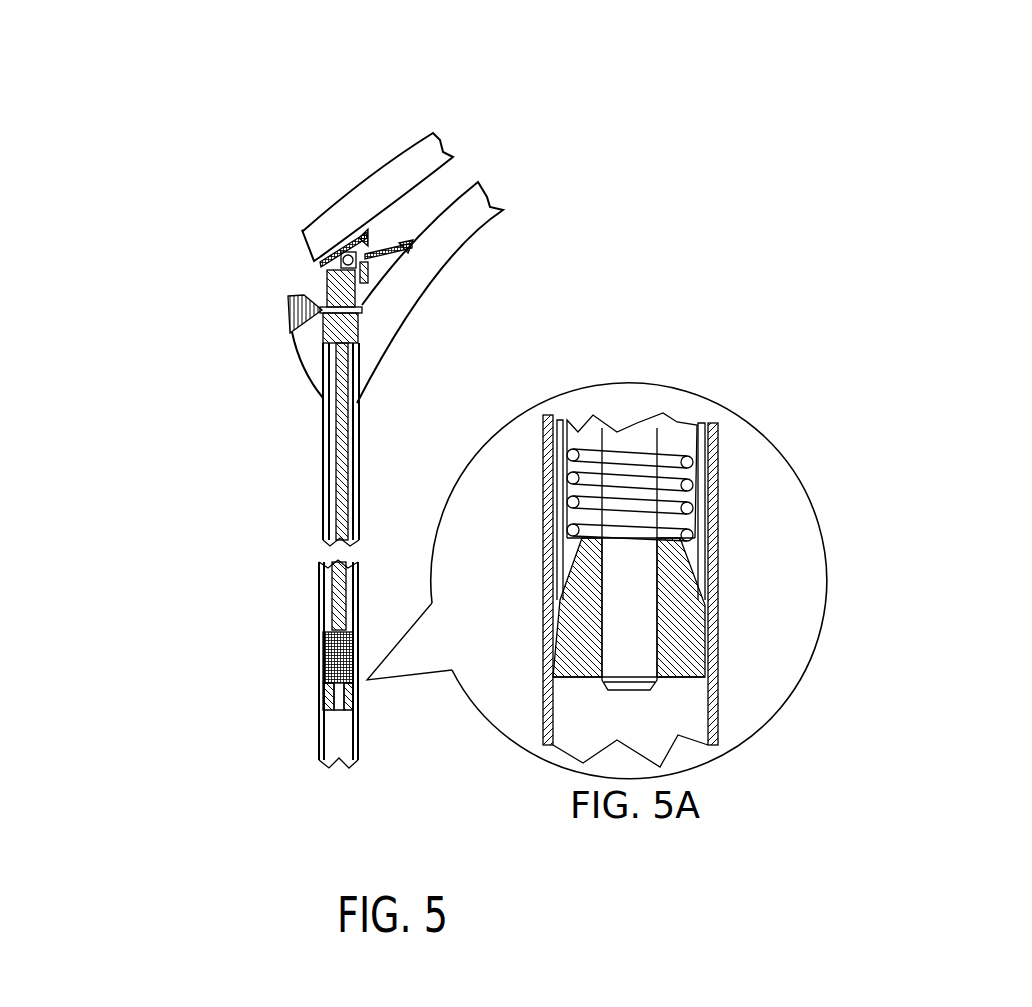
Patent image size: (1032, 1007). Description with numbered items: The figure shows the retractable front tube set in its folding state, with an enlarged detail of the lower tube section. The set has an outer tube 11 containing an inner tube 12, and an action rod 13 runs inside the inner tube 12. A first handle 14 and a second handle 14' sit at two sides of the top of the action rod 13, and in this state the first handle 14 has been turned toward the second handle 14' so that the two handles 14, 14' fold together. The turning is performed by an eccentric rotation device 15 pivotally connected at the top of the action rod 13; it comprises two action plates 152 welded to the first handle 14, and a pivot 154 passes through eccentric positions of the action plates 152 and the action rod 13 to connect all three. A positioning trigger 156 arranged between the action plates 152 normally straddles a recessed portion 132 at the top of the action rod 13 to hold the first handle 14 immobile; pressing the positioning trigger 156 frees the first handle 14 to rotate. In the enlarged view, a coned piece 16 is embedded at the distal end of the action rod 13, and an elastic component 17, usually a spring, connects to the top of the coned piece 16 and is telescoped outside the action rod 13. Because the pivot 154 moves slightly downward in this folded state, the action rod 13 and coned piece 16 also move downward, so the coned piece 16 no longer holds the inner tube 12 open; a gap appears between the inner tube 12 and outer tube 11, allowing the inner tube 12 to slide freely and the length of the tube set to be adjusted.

In FIG. 5A, the outer tube 11 is at (720, 562).
In FIG. 5A, the inner tube 12 is at (700, 498).
In FIG. 5, the action rod 13 is at (337, 458).
In FIG. 5A, the action rod 13 is at (643, 437).
In FIG. 5, the first handle 14 is at (377, 152).
In FIG. 5, the second handle 14' is at (512, 292).
In FIG. 5, the eccentric rotation device 15 is at (288, 255).
In FIG. 5A, the coned piece 16 is at (720, 657).
In FIG. 5A, the elastic component 17 is at (668, 457).
In FIG. 5, the recessed portion 132 is at (323, 278).
In FIG. 5, the action plates 152 is at (320, 266).
In FIG. 5, the pivot 154 is at (290, 298).
In FIG. 5, the positioning trigger 156 is at (405, 248).